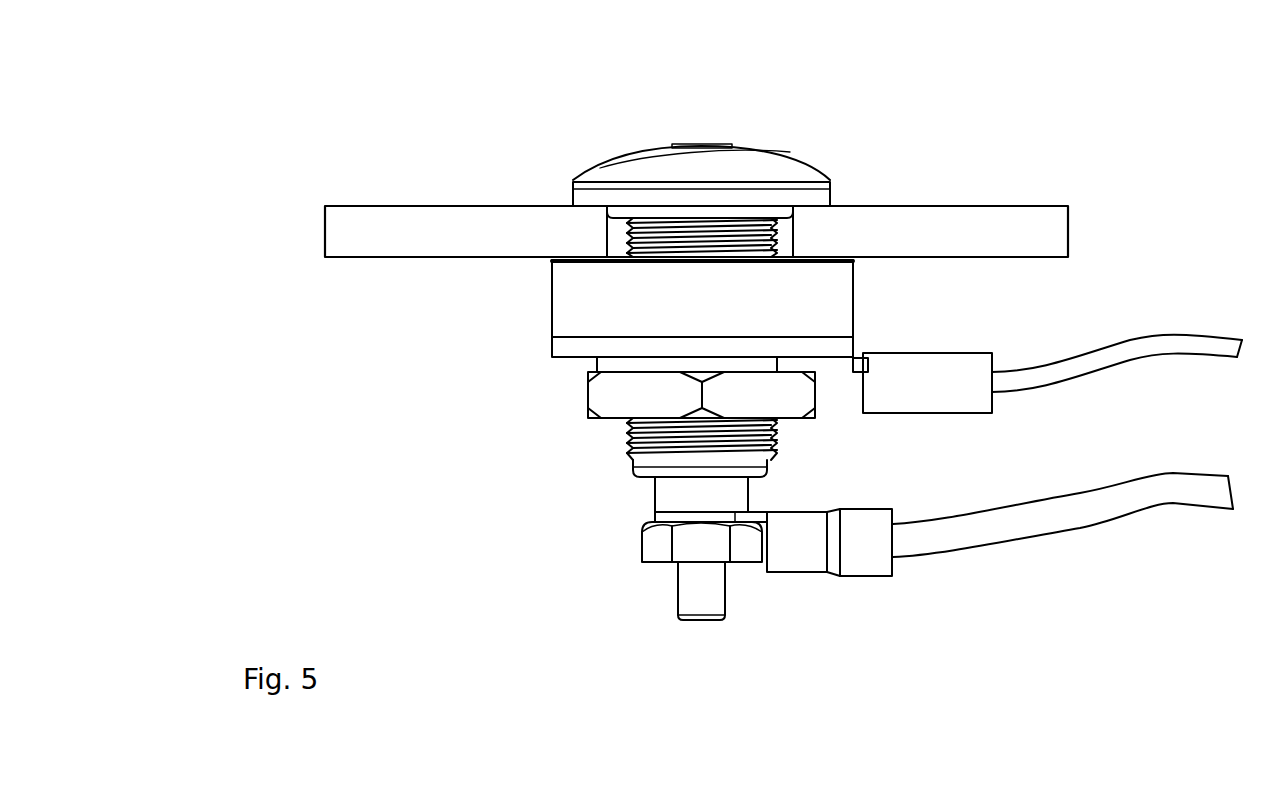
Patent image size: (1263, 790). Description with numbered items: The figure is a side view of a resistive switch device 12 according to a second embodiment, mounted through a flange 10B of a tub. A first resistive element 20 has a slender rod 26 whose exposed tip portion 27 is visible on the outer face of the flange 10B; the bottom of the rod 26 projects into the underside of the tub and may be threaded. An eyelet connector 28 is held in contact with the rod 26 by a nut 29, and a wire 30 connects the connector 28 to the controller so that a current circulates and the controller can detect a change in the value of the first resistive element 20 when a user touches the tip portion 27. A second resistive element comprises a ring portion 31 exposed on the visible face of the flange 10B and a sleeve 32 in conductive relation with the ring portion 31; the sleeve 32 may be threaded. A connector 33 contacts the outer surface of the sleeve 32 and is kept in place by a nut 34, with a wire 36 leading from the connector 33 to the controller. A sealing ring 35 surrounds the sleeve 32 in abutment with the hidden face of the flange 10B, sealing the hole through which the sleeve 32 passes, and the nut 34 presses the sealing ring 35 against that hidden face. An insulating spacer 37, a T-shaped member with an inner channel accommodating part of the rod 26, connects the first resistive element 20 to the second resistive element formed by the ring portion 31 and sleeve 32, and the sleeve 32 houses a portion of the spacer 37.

The flange 10B is at (1050, 205).
The resistive switch device 12 is at (937, 172).
The first resistive element 20 is at (800, 145).
The slender rod 26 is at (698, 597).
The exposed tip portion 27 is at (702, 142).
The eyelet connector 28 is at (855, 562).
The nut 29 is at (655, 545).
The wire 30 is at (1058, 528).
The ring portion 31 is at (628, 212).
The sleeve 32 is at (835, 195).
The connector 33 is at (945, 377).
The nut 34 is at (615, 395).
The sealing ring 35 is at (567, 303).
The wire 36 is at (1138, 362).
The insulating spacer 37 is at (617, 170).